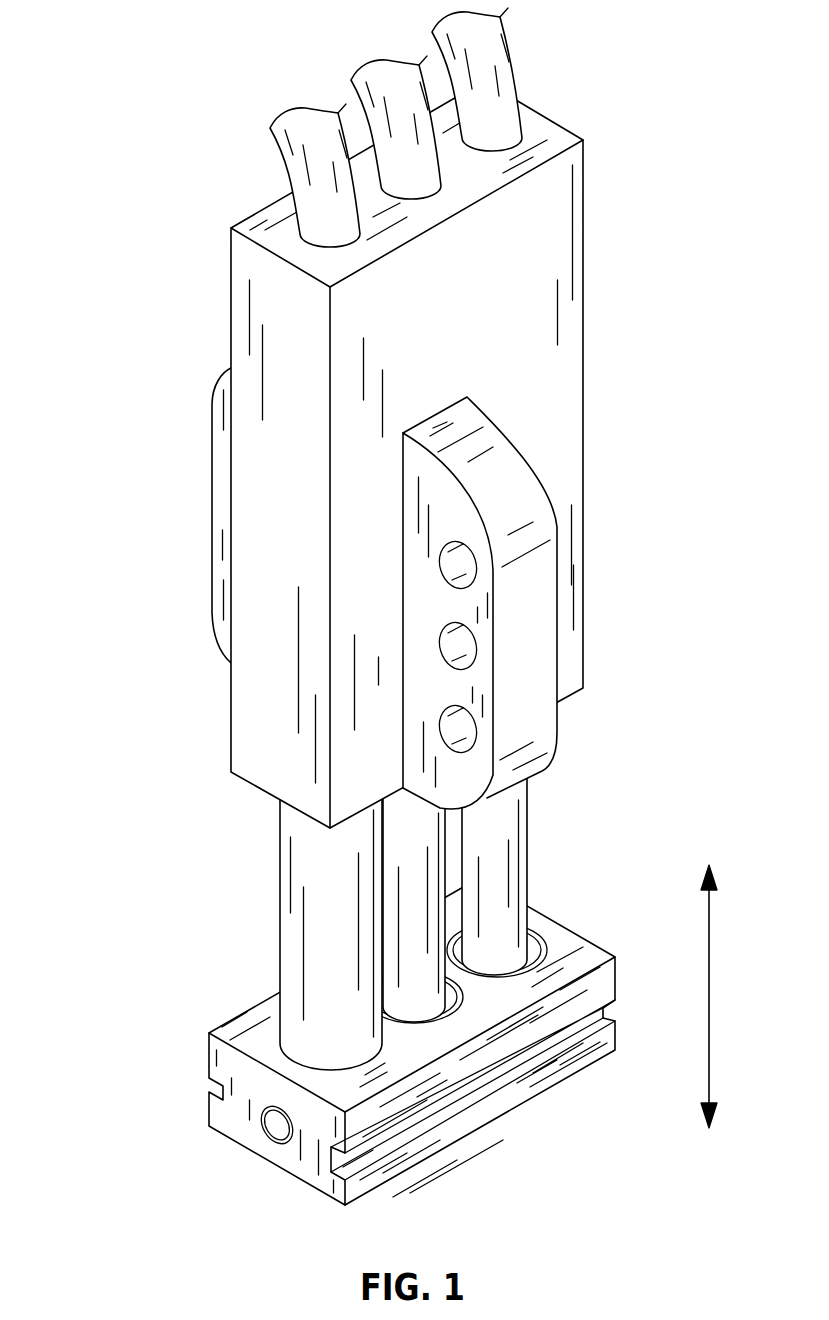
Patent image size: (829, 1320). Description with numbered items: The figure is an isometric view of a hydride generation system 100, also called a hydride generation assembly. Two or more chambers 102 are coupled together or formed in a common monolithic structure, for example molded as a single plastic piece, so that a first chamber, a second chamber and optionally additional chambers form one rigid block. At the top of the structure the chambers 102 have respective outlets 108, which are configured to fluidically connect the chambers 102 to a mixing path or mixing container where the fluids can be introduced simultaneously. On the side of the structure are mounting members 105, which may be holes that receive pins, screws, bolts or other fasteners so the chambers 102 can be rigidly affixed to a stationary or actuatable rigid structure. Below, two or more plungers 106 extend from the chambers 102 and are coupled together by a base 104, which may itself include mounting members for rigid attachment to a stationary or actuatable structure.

The hydride generation system 100 is at (391, 606).
The chambers 102 is at (550, 120).
The base 104 is at (278, 1168).
The mounting members 105 is at (457, 647).
The plungers 106 is at (450, 862).
The outlets 108 is at (303, 202).